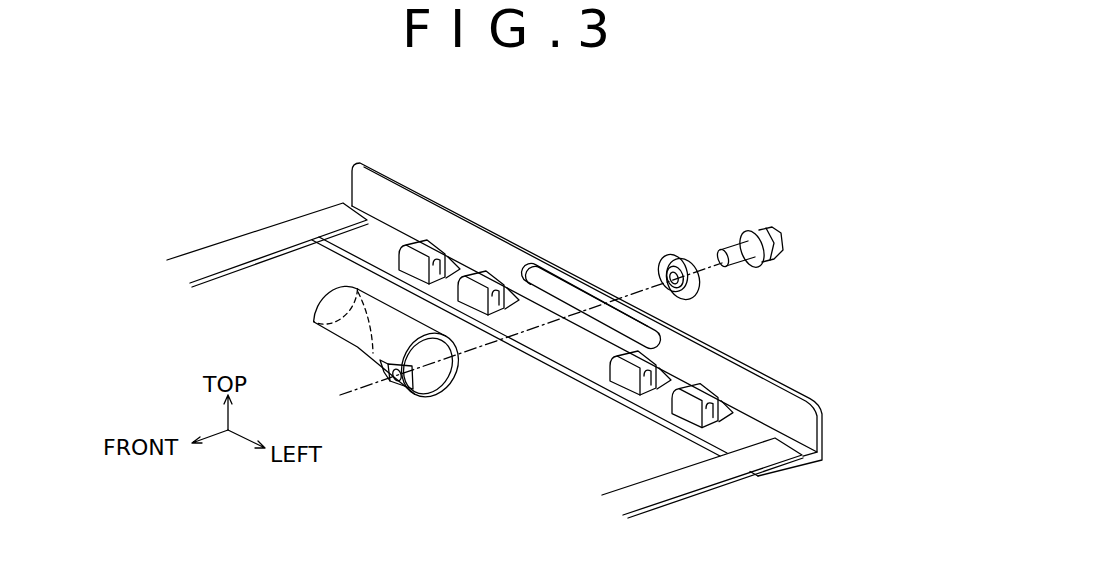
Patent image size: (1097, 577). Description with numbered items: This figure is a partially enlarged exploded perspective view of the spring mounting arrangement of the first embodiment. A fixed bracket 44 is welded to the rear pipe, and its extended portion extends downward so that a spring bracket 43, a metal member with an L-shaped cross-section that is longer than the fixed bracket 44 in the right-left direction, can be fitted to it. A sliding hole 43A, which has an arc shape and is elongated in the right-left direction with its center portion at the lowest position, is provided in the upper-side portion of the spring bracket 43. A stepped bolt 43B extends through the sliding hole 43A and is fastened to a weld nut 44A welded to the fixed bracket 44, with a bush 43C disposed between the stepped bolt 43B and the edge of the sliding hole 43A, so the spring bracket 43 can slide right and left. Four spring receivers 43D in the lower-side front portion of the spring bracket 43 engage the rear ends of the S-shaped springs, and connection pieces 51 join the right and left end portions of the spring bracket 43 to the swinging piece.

The spring bracket 43 is at (418, 216).
The sliding hole 43A is at (542, 272).
The stepped bolt 43B is at (782, 242).
The bush 43C is at (667, 260).
The spring receivers 43D is at (483, 287).
The fixed bracket 44 is at (342, 310).
The weld nut 44A is at (395, 385).
The connection pieces 51 is at (243, 247).